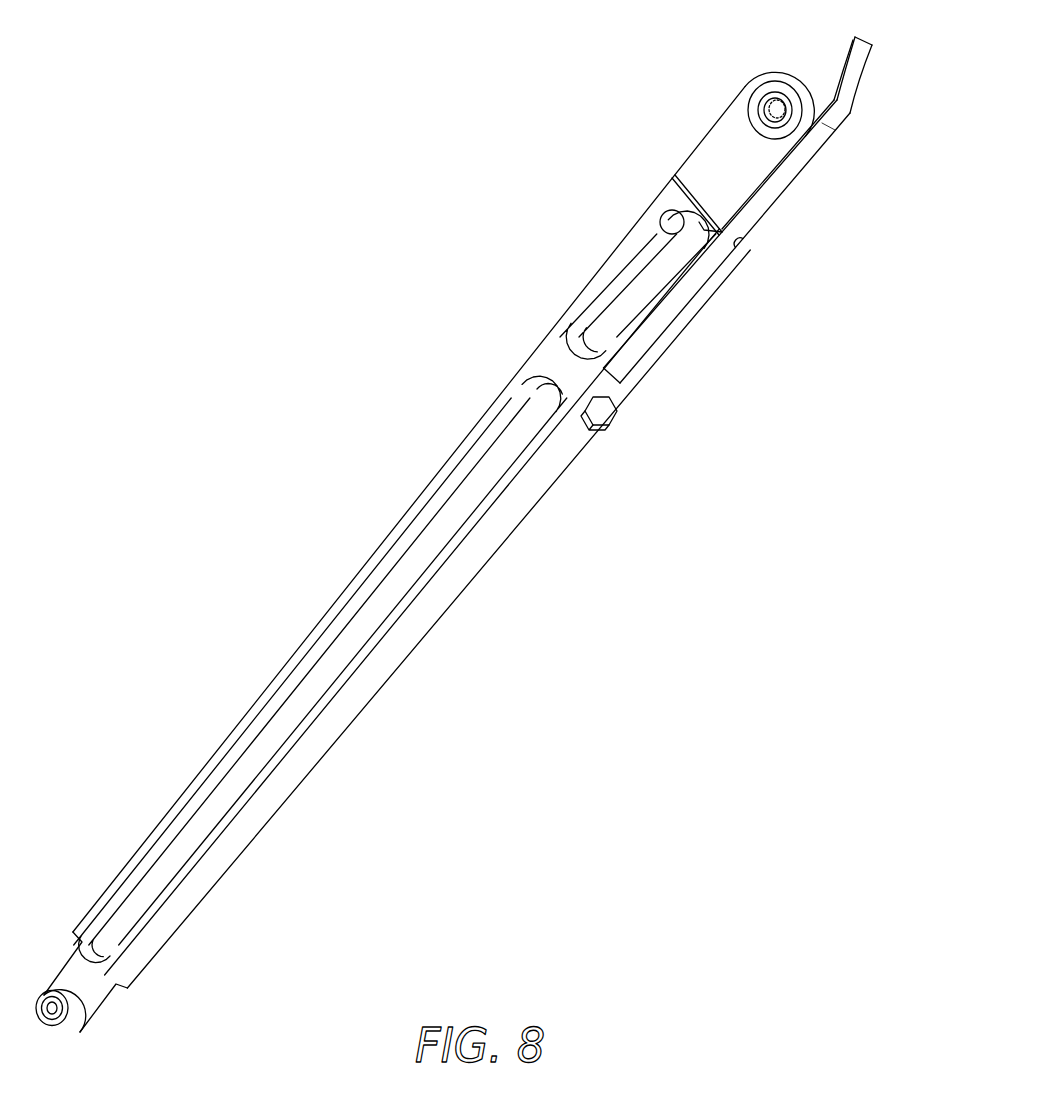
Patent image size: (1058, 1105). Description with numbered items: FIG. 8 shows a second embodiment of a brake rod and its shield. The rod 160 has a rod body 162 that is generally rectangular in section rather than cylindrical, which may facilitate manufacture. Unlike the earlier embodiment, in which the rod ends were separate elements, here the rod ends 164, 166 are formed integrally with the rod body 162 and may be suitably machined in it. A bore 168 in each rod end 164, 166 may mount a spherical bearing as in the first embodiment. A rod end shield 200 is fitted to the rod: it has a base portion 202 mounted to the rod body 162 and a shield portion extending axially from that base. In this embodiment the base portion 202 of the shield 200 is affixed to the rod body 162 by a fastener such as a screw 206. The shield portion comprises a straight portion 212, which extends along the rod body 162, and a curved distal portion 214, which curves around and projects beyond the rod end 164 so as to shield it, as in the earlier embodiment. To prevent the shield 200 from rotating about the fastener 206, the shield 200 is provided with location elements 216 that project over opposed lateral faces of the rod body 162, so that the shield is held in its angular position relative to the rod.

The rod 160 is at (333, 803).
The rod body 162 is at (460, 578).
The rod end 164 is at (717, 147).
The rod end 166 is at (90, 1022).
The bore 168 is at (787, 65).
The rod end shield 200 is at (744, 255).
The base portion 202 is at (624, 386).
The screw 206 is at (604, 416).
The straight portion 212 is at (668, 328).
The curved distal portion 214 is at (845, 108).
The location elements 216 is at (668, 236).